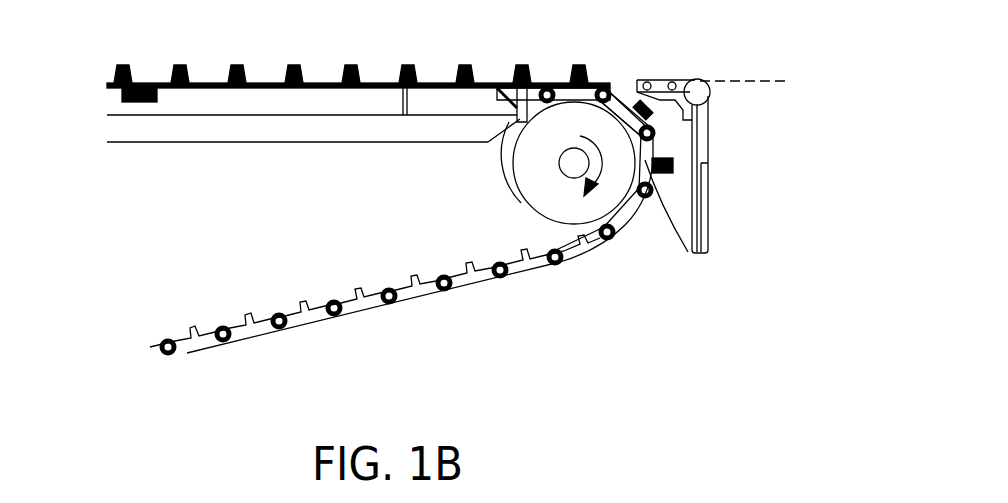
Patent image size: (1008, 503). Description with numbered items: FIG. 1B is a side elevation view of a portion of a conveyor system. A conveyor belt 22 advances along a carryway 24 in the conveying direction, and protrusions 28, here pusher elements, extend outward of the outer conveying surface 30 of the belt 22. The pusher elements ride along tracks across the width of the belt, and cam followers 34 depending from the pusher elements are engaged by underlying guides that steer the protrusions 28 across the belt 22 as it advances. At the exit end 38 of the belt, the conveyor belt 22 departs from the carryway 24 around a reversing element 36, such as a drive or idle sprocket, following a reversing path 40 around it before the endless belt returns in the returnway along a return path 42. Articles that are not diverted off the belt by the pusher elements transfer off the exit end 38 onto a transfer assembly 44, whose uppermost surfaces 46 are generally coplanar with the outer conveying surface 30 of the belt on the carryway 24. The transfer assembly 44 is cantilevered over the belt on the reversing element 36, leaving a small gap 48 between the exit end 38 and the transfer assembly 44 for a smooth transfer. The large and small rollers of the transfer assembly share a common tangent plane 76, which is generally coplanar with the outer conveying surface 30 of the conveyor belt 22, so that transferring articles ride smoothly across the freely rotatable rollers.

The conveyor belt 22 is at (475, 275).
The carryway 24 is at (248, 107).
The protrusions 28 is at (515, 82).
The outer conveying surface 30 is at (430, 82).
The cam followers 34 is at (517, 125).
The reversing element 36 is at (591, 212).
The exit end 38 is at (603, 86).
The reversing path 40 is at (653, 178).
The return path 42 is at (310, 320).
The transfer assembly 44 is at (702, 82).
The uppermost surfaces 46 is at (670, 80).
The gap 48 is at (627, 78).
The common tangent plane 76 is at (777, 80).